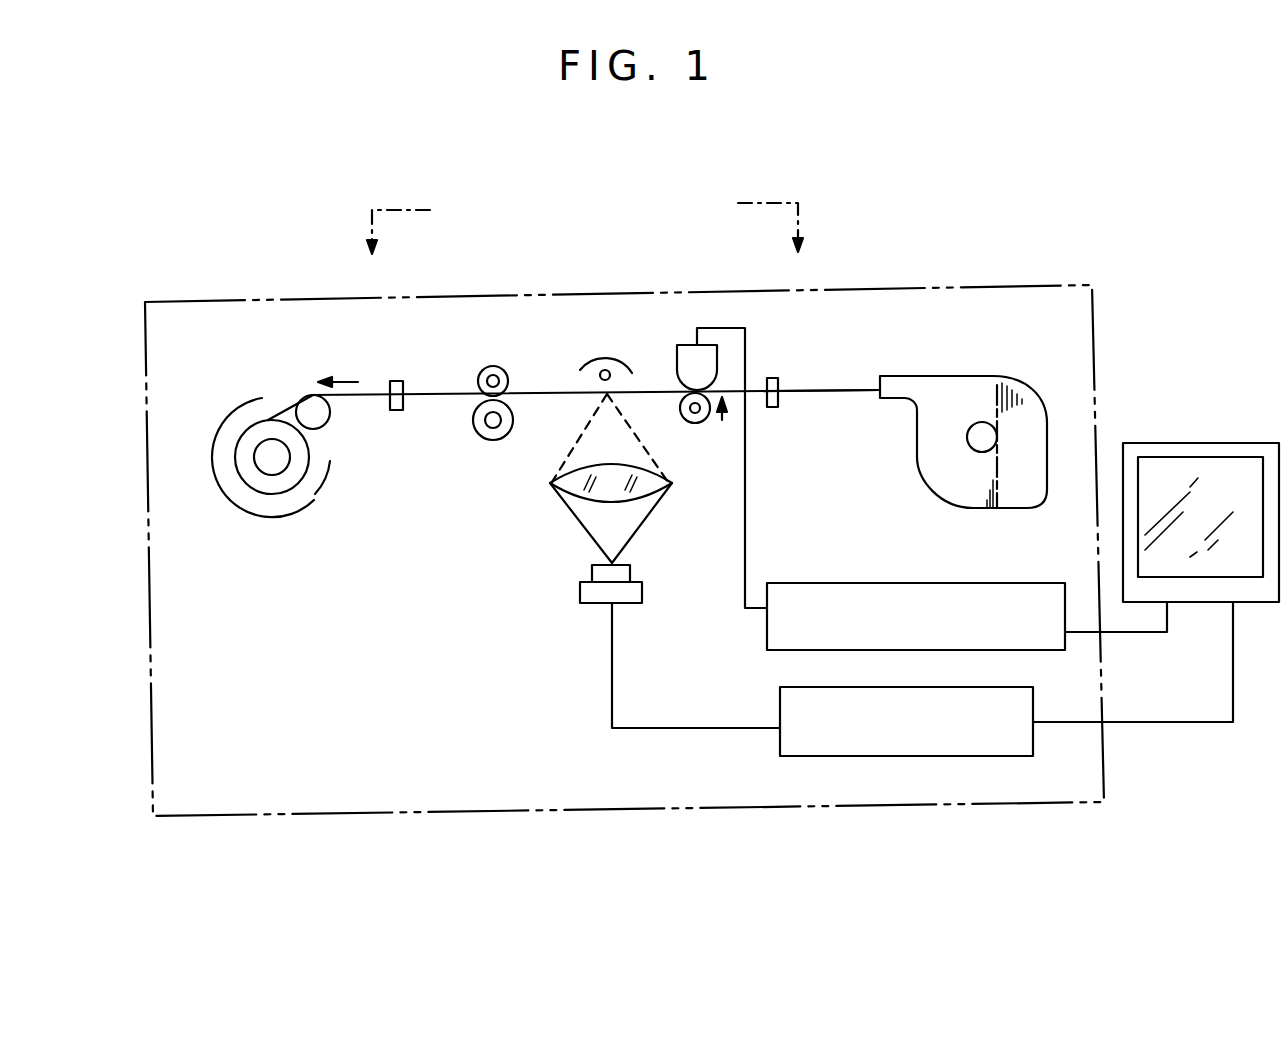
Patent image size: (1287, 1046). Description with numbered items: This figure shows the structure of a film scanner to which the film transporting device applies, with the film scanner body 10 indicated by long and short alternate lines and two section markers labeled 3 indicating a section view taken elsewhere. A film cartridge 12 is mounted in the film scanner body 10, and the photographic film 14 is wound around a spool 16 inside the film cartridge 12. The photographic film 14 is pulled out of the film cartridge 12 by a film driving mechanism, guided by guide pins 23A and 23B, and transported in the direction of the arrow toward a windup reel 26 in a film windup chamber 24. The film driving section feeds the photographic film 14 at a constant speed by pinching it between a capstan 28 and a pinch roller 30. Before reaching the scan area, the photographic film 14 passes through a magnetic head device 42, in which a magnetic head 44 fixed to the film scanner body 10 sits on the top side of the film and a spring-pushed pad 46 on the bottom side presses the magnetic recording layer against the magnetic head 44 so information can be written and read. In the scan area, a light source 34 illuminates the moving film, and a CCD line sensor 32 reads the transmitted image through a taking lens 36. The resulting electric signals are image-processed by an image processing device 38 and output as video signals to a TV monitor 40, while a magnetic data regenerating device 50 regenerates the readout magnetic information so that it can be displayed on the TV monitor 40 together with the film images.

The film scanner body 10 is at (642, 808).
The section line for FIG. 3 is at (588, 250).
The film cartridge 12 is at (955, 386).
The photographic film 14 is at (822, 389).
The spool 16 is at (975, 443).
The guide pin 23A is at (772, 408).
The guide pin 23B is at (394, 411).
The film windup chamber 24 is at (312, 483).
The windup reel 26 is at (260, 487).
The capstan 28 is at (480, 372).
The pinch roller 30 is at (493, 441).
The CCD line sensor 32 is at (643, 590).
The light source 34 is at (598, 372).
The taking lens 36 is at (602, 492).
The image processing device 38 is at (788, 760).
The TV monitor 40 is at (1172, 442).
The magnetic head device 42 is at (722, 420).
The magnetic head 44 is at (688, 373).
The pad 46 is at (695, 424).
The magnetic data regenerating device 50 is at (864, 582).